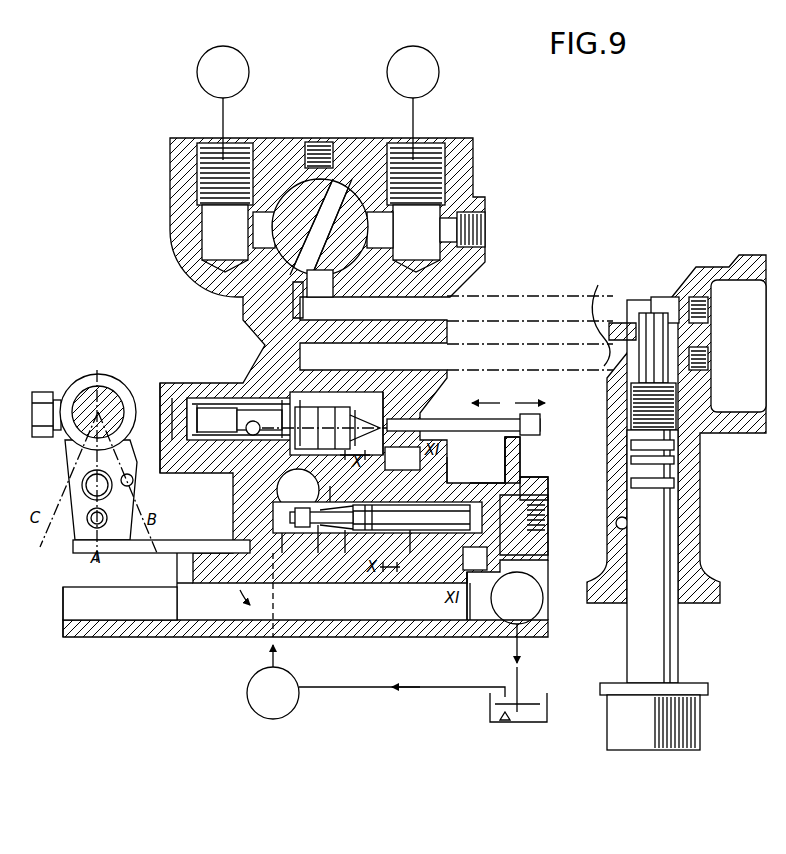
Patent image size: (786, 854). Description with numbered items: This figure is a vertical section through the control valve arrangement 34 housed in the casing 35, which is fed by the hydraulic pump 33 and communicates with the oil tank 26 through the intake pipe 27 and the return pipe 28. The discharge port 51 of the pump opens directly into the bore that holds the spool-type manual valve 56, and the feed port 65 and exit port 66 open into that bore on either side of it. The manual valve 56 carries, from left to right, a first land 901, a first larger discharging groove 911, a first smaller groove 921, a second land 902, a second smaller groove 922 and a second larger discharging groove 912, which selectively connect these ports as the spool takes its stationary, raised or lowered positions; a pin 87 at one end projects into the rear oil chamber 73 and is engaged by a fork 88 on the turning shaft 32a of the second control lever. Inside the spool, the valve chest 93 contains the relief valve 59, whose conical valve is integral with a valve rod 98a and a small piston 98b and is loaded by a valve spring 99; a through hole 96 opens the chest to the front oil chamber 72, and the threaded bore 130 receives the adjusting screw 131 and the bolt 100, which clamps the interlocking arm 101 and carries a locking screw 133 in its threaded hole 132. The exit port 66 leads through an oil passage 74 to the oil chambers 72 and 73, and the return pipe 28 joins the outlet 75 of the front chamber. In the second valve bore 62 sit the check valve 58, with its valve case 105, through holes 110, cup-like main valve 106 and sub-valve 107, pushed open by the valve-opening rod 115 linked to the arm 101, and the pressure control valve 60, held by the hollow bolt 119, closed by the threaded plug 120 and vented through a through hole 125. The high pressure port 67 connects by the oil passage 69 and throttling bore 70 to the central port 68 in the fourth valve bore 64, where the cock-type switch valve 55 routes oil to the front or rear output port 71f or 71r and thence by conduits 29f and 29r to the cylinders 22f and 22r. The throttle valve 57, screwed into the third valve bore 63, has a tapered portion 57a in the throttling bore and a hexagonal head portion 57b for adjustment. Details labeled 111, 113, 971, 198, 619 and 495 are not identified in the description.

The rear hydraulic cylinder 22r is at (223, 103).
The front hydraulic cylinder 22f is at (413, 103).
The hydraulic conduit 29r is at (222, 112).
The hydraulic conduit 29f is at (418, 112).
The rear output port 71r is at (270, 232).
The front output port 71f is at (380, 212).
The casing 35 is at (470, 173).
The switch valve 55 is at (298, 206).
The fourth valve bore 64 is at (343, 206).
The central port 68 is at (300, 290).
The control valve arrangement 34 is at (505, 272).
The oil passage 69 is at (598, 318).
The tapered portion 57a is at (650, 313).
The throttling bore 70 is at (666, 305).
The third valve bore 63 is at (630, 479).
The throttle valve 57 is at (668, 627).
The hexagonal head portion 57b is at (704, 719).
The turning shaft 32a is at (96, 375).
The threaded plug 120 is at (165, 410).
The hollow bolt 119 is at (172, 395).
The through hole 125 is at (196, 400).
The pressure control valve 60 is at (210, 400).
The second valve bore 62 is at (255, 418).
The valve seat 111 is at (283, 400).
The high pressure port 67 is at (303, 392).
The check valve 58 is at (318, 392).
The valve case 105 is at (335, 392).
The through holes 110 is at (356, 400).
The main valve 106 is at (383, 405).
The sub-valve 107 is at (327, 423).
The valve-opening rod 115 is at (447, 388).
The feed port 65 is at (402, 458).
The relief valve 59 is at (450, 470).
The second smaller groove 922 is at (505, 470).
The second larger discharging groove 912 is at (485, 483).
The interlocking arm 101 is at (522, 460).
The adjusting screw 131 is at (545, 482).
The locking screw 133 is at (548, 510).
The threaded hole 132 is at (548, 527).
The bolt 100 is at (548, 547).
The discharge port 51 is at (286, 480).
The seal 113 is at (328, 486).
The valve spring 99 is at (377, 517).
The small piston 98b is at (288, 518).
The through hole 96 is at (480, 556).
The outlet 75 is at (530, 588).
The threaded bore 130 is at (517, 598).
The front oil chamber 72 is at (490, 614).
The first larger discharging groove 911 is at (284, 550).
The valve rod 98a is at (318, 553).
The seal 971 is at (345, 553).
The sleeve 198 is at (410, 553).
The seal 619 is at (298, 583).
The seal 495 is at (330, 583).
The first smaller groove 921 is at (385, 583).
The second land 902 is at (412, 583).
The valve chest 93 is at (440, 583).
The exit port 66 is at (230, 598).
The rear oil chamber 73 is at (100, 603).
The oil passage 74 is at (200, 622).
The first land 901 is at (170, 553).
The fork 88 is at (66, 468).
The pin 87 is at (80, 538).
The manual valve 56 is at (178, 526).
The hydraulic pump 33 is at (273, 636).
The intake pipe 27 is at (343, 687).
The oil tank 26 is at (490, 711).
The return pipe 28 is at (520, 651).